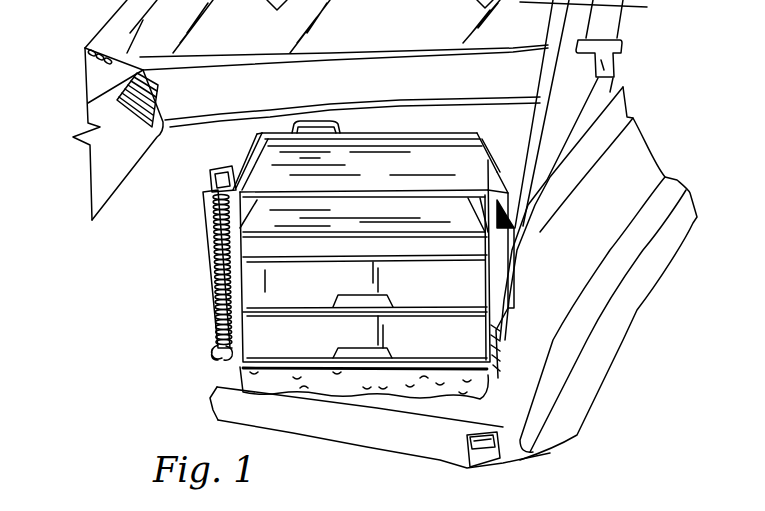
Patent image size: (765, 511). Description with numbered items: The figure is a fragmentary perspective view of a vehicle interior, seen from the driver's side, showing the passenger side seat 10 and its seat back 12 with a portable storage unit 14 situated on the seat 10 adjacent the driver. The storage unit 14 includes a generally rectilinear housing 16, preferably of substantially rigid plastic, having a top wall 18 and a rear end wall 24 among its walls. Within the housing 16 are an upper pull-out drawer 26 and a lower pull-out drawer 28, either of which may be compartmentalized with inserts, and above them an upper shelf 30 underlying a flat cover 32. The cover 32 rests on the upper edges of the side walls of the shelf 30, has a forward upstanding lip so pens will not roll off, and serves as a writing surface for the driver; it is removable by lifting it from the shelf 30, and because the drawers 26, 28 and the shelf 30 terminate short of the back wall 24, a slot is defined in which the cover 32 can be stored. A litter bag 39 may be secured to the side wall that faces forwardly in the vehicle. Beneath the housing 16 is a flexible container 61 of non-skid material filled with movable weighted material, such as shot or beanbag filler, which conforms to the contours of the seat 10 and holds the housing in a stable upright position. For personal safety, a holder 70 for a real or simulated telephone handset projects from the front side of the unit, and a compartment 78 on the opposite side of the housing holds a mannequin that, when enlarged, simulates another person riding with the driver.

The passenger side seat 10 is at (225, 407).
The seat back 12 is at (597, 295).
The portable storage unit 14 is at (112, 261).
The housing 16 is at (485, 163).
The top wall 18 is at (252, 173).
The end wall 24 is at (253, 238).
The upper pull-out drawer 26 is at (250, 283).
The lower pull-out drawer 28 is at (250, 335).
The upper shelf 30 is at (250, 208).
The cover 32 is at (350, 160).
The litter bag 39 is at (252, 172).
The flexible container 61 is at (377, 388).
The holder 70 is at (207, 183).
The compartment 78 is at (510, 262).